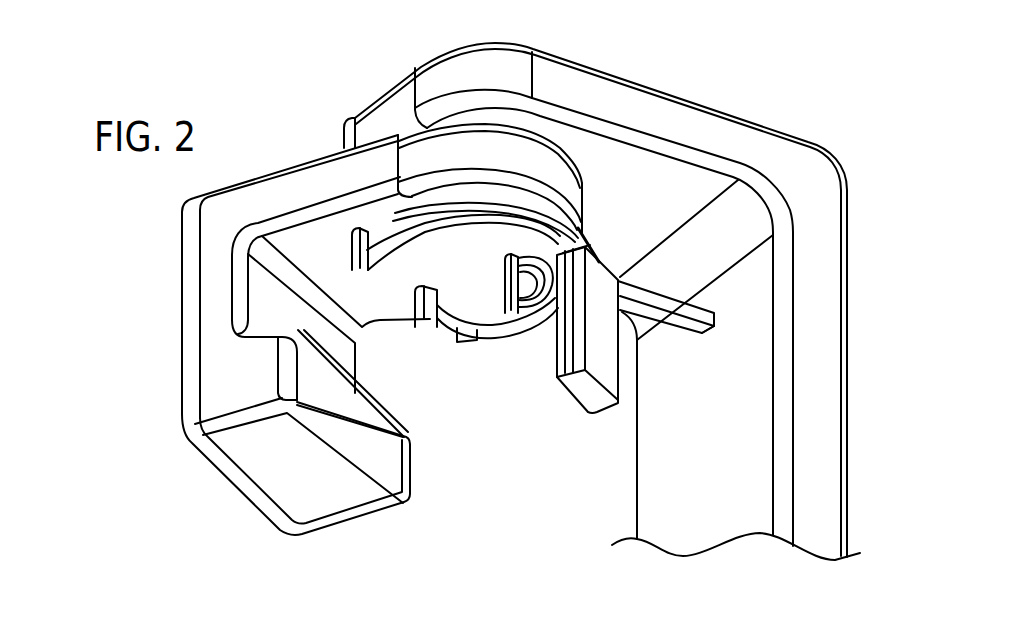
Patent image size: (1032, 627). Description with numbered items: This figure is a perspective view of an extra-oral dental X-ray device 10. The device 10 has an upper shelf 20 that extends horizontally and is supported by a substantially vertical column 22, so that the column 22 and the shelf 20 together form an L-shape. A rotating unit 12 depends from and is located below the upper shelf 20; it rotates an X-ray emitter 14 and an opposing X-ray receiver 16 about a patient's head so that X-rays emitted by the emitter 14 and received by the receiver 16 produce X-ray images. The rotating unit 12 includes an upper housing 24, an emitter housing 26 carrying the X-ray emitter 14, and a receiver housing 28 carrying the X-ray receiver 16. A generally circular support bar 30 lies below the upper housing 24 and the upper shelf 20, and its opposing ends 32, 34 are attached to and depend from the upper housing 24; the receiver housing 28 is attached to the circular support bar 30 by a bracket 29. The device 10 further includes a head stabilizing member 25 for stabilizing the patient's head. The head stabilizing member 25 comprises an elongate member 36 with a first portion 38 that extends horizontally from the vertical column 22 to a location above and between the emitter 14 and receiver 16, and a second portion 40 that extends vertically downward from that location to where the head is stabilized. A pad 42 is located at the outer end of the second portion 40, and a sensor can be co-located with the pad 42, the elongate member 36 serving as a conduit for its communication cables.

The X-ray device 10 is at (785, 70).
The rotating unit 12 is at (148, 259).
The X-ray emitter 14 is at (393, 460).
The X-ray receiver 16 is at (552, 358).
The upper shelf 20 is at (598, 77).
The substantially vertical column 22 is at (820, 332).
The upper housing 24 is at (290, 180).
The head stabilizing member 25 is at (678, 335).
The emitter housing 26 is at (187, 327).
The receiver housing 28 is at (605, 363).
The bracket 29 is at (600, 230).
The support bar 30 is at (430, 217).
The opposing end 32 is at (360, 273).
The opposing end 34 is at (420, 297).
The elongate member 36 is at (652, 297).
The first portion 38 is at (683, 308).
The second portion 40 is at (507, 283).
The pad 42 is at (473, 333).